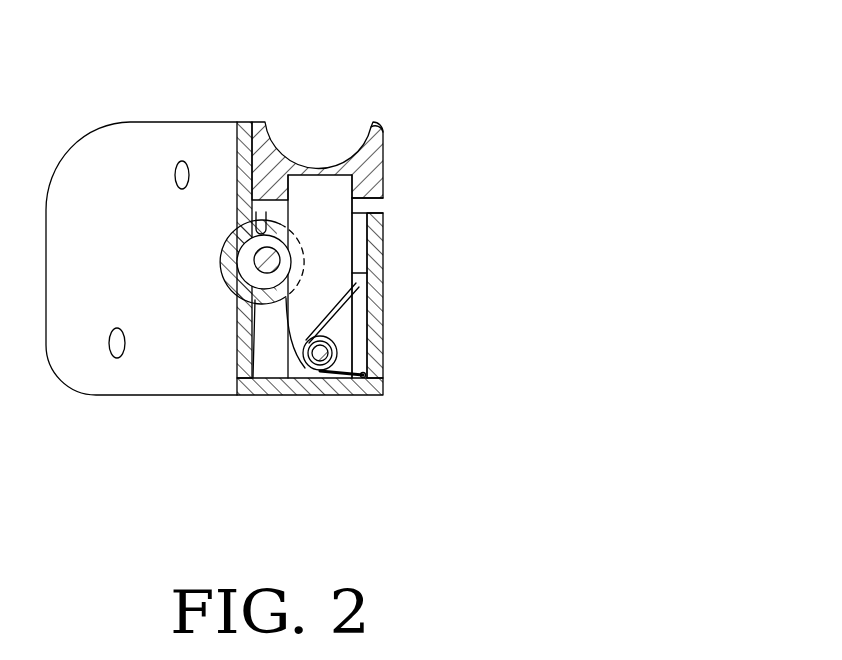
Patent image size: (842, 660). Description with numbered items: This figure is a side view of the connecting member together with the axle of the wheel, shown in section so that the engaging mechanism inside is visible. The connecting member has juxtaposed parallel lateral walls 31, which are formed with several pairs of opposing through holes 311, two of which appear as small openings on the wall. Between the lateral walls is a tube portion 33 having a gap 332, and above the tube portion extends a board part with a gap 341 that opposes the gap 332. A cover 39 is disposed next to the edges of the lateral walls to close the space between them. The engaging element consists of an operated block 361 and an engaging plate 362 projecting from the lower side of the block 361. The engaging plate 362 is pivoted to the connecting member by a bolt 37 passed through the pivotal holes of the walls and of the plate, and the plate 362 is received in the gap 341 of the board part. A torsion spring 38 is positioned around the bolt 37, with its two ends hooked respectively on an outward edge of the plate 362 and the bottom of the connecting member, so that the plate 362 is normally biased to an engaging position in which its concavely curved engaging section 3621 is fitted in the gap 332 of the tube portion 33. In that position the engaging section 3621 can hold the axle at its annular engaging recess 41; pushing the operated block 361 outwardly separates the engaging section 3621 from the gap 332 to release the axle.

The lateral wall 31 is at (92, 160).
The through hole 311 is at (182, 161).
The tube portion 33 is at (265, 140).
The gap 332 is at (378, 128).
The operated block 361 is at (288, 222).
The gap 341 is at (372, 205).
The engaging plate 362 is at (337, 243).
The concavely curved engaging section 3621 is at (297, 259).
The cover 39 is at (365, 333).
The bolt 37 is at (338, 356).
The annular engaging recess 41 is at (270, 283).
The torsion spring 38 is at (320, 378).